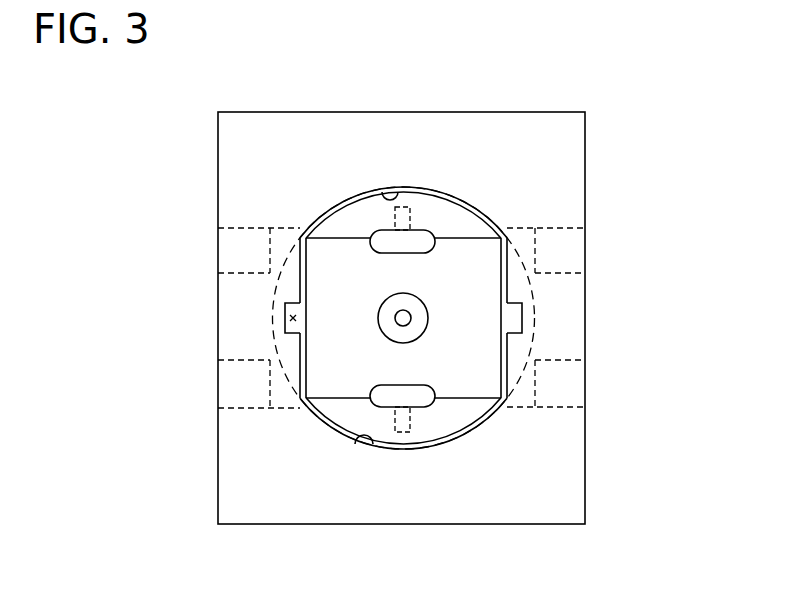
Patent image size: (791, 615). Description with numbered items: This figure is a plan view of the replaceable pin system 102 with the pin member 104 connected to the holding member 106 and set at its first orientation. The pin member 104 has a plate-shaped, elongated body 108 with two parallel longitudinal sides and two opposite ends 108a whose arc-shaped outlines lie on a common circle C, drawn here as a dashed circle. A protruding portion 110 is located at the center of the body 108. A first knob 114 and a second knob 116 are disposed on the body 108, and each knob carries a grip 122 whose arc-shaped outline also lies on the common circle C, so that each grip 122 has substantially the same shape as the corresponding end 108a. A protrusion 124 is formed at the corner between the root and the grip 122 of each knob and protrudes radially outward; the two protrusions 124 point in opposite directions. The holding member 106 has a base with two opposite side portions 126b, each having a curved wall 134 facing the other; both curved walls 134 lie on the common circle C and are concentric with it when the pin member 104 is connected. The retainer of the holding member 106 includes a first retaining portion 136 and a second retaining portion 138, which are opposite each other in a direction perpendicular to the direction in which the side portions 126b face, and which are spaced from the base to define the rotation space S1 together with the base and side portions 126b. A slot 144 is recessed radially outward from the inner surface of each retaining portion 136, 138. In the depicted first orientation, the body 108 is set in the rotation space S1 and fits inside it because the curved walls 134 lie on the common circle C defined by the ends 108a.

The replaceable pin system 102 is at (712, 76).
The pin member 104 is at (467, 262).
The holding member 106 is at (218, 131).
The body 108 is at (487, 407).
The end 108a is at (470, 215).
The protruding portion 110 is at (427, 300).
The first knob 114 is at (482, 221).
The second knob 116 is at (320, 417).
The grip 122 is at (337, 218).
The protrusion 124 is at (412, 218).
The side portion 126b is at (234, 176).
The curved wall 134 is at (397, 203).
The first retaining portion 136 is at (227, 303).
The second retaining portion 138 is at (572, 340).
The slot 144 is at (513, 302).
The common circle C is at (535, 308).
The rotation space S1 is at (291, 318).